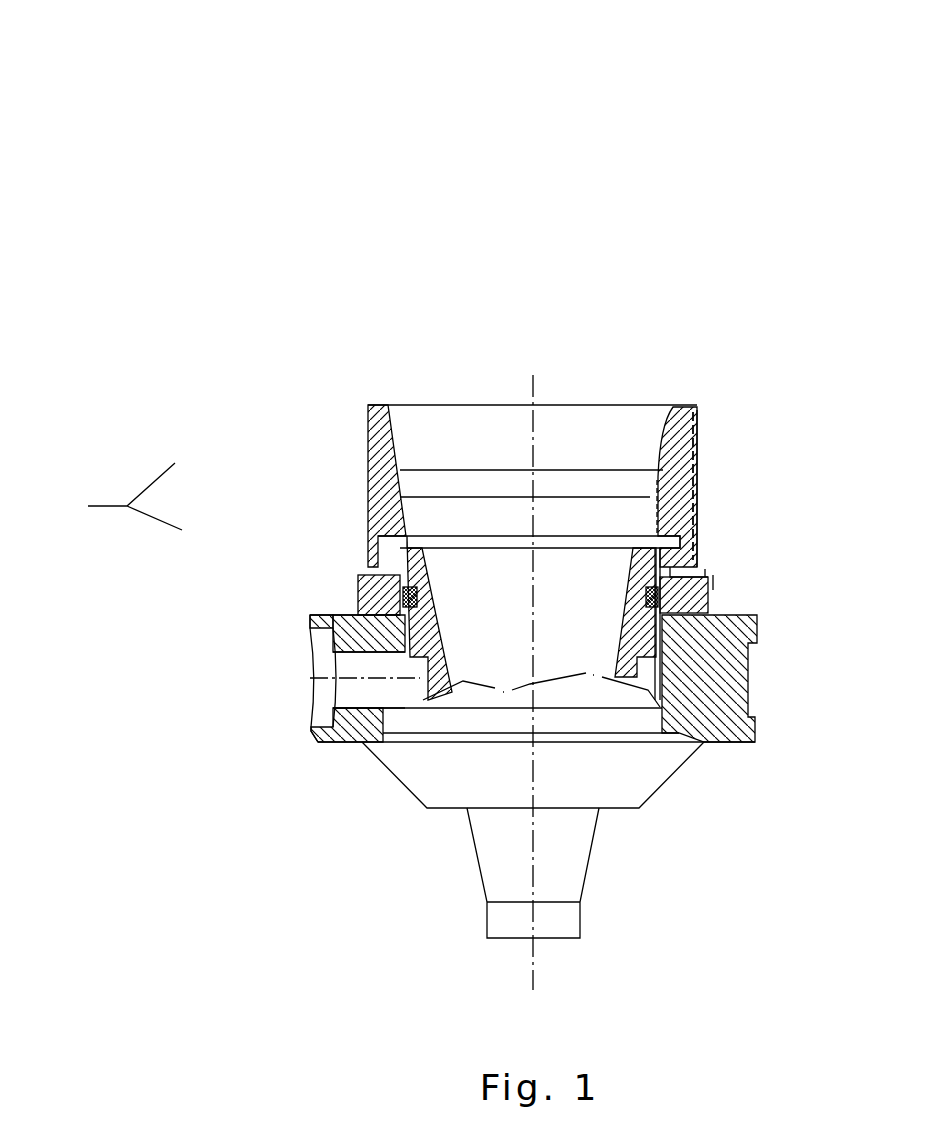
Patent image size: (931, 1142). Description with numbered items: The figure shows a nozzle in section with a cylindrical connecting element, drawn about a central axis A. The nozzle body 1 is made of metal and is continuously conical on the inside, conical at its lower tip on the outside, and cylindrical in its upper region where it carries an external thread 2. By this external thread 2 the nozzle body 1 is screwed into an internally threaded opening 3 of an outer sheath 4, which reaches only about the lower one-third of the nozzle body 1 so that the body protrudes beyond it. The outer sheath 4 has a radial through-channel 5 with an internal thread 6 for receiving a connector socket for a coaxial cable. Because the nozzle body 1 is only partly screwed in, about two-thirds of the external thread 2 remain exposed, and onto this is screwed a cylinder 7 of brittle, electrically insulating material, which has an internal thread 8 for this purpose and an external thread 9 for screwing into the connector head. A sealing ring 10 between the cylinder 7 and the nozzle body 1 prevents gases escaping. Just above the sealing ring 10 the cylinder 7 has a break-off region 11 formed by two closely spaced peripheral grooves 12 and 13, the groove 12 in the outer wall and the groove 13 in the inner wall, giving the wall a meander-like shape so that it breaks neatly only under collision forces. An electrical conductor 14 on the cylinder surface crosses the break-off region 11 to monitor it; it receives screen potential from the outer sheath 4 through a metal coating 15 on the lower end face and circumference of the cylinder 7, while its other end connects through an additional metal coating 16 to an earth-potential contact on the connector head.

The nozzle body 1 is at (645, 562).
The external thread 2 is at (409, 533).
The internally threaded opening 3 is at (651, 677).
The outer sheath 4 is at (712, 707).
The radial through-channel 5 is at (354, 697).
The internal thread 6 is at (358, 652).
The cylinder 7 is at (681, 435).
The internal thread 8 is at (656, 485).
The external thread 9 is at (700, 480).
The sealing ring 10 is at (400, 597).
The break-off region 11 is at (134, 496).
The peripheral groove 12 is at (363, 568).
The peripheral groove 13 is at (370, 533).
The electrical conductor 14 is at (707, 560).
The metal coating 15 is at (720, 597).
The additional metal coating 16 is at (703, 433).
The nozzle axis A is at (533, 965).